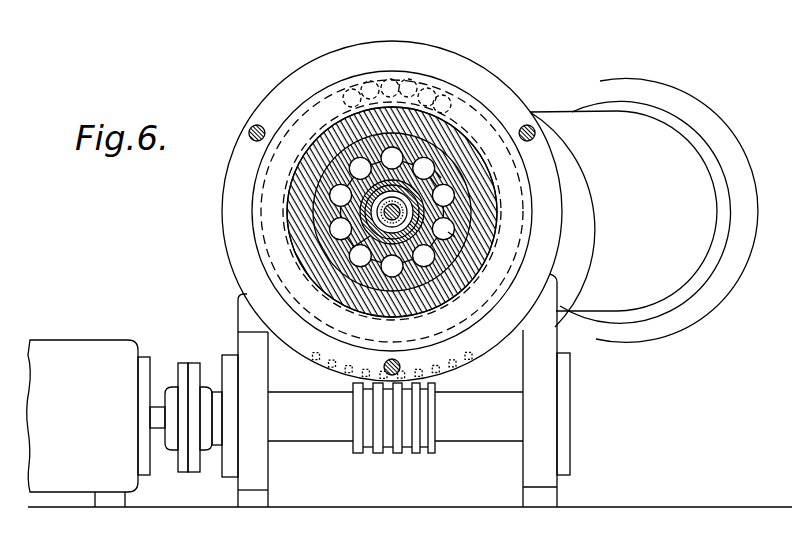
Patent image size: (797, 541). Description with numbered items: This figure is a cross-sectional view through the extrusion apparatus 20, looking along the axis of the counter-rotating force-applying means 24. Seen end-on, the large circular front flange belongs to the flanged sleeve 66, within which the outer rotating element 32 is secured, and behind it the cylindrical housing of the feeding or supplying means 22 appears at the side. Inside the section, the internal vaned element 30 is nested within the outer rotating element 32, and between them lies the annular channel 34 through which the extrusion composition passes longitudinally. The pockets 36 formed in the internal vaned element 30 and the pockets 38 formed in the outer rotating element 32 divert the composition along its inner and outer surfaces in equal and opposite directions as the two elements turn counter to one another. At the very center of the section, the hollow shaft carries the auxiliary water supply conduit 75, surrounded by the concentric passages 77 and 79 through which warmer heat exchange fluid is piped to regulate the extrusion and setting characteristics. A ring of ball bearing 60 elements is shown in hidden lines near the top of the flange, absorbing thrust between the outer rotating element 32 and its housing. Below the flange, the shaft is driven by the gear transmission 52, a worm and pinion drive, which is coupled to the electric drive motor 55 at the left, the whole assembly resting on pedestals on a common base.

The extrusion apparatus 20 is at (470, 57).
The feeding or supplying means 22 is at (636, 233).
The counter-rotating force-applying means 24 is at (458, 278).
The internal vaned element 30 is at (424, 155).
The outer rotating element 32 is at (448, 232).
The annular channel 34 is at (388, 146).
The pockets 36 is at (446, 210).
The pockets 38 is at (436, 172).
The gear transmission 52 is at (417, 456).
The electric drive motor 55 is at (78, 357).
The ball bearing 60 is at (410, 88).
The flanged sleeve 66 is at (428, 128).
The auxiliary water supply conduit 75 is at (403, 238).
The concentric passage 77 is at (382, 226).
The concentric passage 79 is at (352, 248).